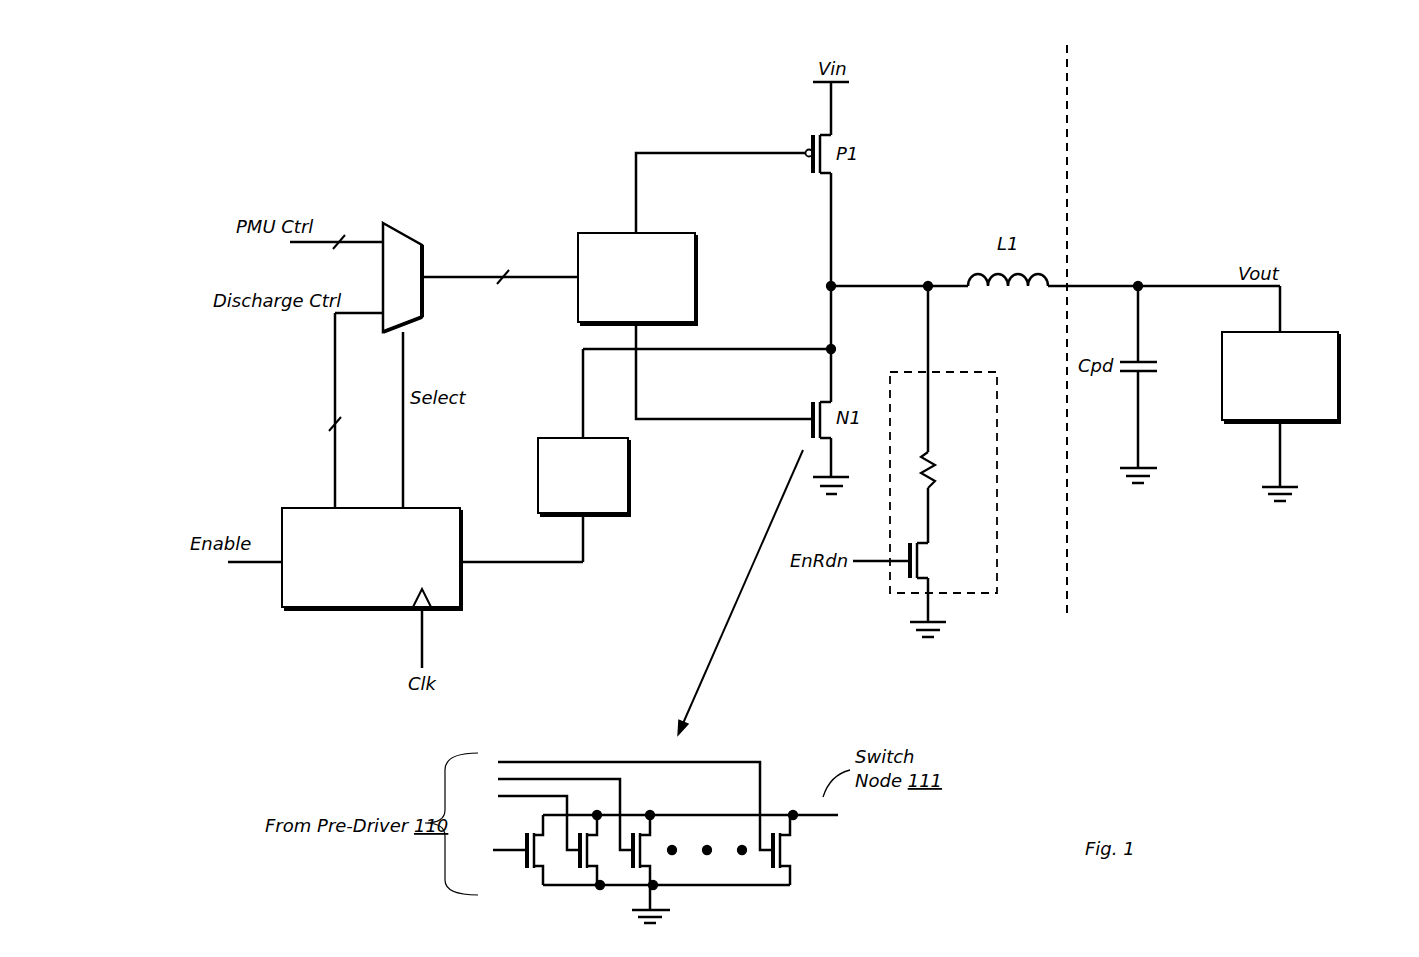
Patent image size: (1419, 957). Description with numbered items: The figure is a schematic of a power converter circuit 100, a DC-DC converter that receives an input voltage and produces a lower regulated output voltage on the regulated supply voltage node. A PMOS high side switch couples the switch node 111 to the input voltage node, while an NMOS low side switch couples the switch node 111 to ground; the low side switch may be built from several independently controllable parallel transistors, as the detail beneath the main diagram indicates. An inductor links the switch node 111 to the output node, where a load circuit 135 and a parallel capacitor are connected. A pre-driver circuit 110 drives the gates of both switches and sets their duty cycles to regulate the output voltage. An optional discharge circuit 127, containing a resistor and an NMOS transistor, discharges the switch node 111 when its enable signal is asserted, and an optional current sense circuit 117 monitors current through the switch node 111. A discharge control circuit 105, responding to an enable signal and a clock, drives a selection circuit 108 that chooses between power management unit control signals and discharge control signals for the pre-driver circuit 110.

The power converter circuit 100 is at (650, 42).
The discharge control circuit 105 is at (372, 558).
The selection circuit 108 is at (411, 223).
The pre-driver circuit 110 is at (638, 278).
The switch node 111 is at (840, 279).
The current sense circuit 117 is at (584, 476).
The discharge circuit 127 is at (970, 600).
The load circuit 135 is at (1281, 377).